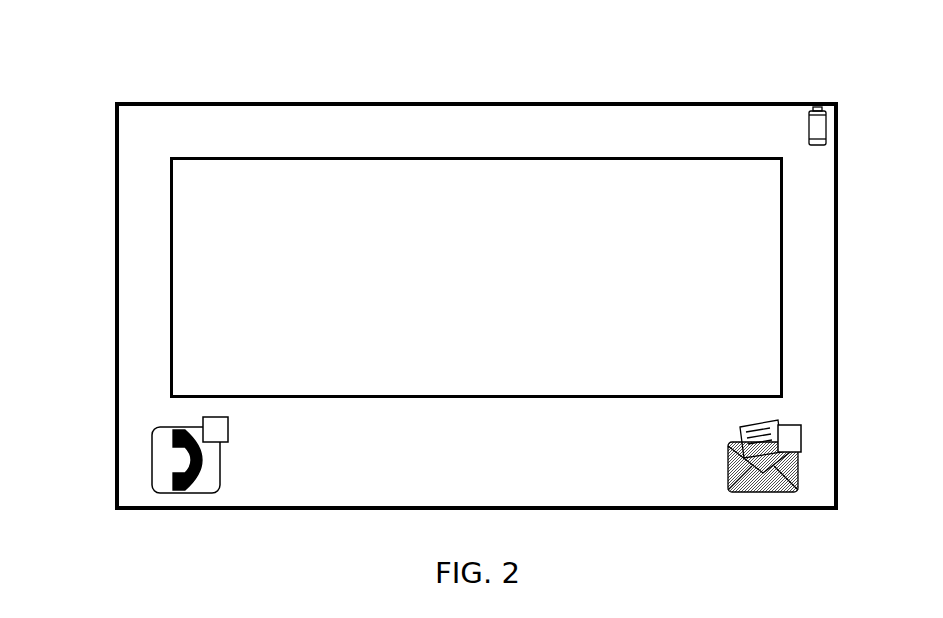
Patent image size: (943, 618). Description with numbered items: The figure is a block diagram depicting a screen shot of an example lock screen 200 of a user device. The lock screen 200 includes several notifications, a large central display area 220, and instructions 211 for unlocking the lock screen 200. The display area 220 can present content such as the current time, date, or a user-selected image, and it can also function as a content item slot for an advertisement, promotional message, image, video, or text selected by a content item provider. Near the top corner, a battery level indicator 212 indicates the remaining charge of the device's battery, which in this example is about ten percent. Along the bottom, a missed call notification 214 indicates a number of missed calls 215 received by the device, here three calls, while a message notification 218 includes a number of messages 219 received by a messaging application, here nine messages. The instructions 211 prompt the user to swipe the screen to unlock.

The lock screen 200 is at (133, 84).
The display area 220 is at (190, 220).
The battery level indicator 212 is at (755, 120).
The missed call notification 214 is at (143, 462).
The number of missed calls 215 is at (196, 418).
The message notification 218 is at (717, 474).
The number of messages 219 is at (810, 435).
The instructions 211 is at (368, 482).